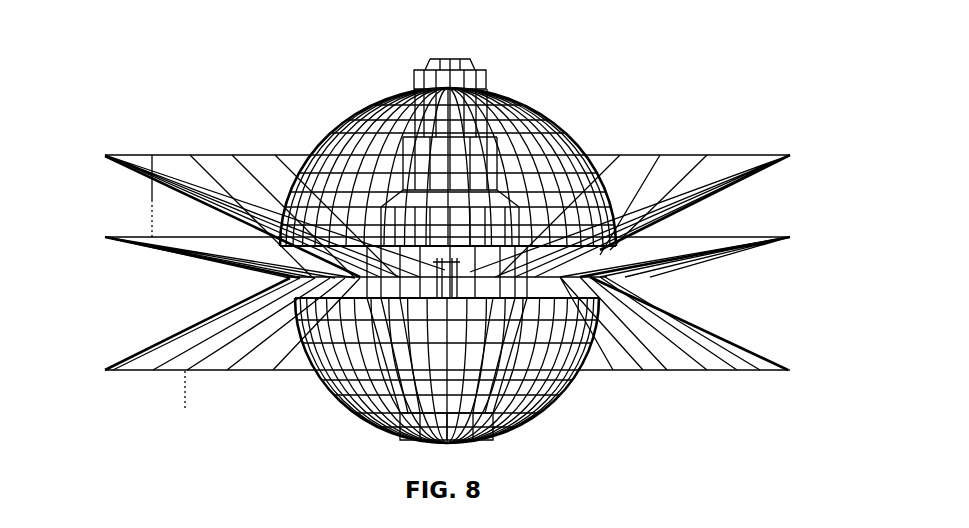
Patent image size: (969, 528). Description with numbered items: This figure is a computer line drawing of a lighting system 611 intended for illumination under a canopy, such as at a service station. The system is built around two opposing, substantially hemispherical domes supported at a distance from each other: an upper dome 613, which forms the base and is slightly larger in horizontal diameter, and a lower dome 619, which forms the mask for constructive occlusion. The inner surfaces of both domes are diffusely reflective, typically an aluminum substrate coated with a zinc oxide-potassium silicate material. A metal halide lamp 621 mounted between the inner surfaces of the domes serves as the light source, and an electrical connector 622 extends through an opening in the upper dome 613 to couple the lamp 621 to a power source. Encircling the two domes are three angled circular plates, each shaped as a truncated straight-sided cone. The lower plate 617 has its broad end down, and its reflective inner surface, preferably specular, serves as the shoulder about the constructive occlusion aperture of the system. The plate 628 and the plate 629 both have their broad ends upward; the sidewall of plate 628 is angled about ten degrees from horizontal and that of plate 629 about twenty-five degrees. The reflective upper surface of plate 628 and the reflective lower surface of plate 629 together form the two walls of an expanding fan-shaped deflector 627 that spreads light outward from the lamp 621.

The lighting system 611 is at (753, 97).
The upper dome 613 is at (338, 120).
The lower plate 617 is at (737, 373).
The lower dome 619 is at (325, 380).
The metal halide lamp 621 is at (510, 205).
The electrical connector 622 is at (492, 70).
The expanding fan-shaped deflector 627 is at (135, 180).
The plate 628 is at (752, 252).
The plate 629 is at (782, 168).